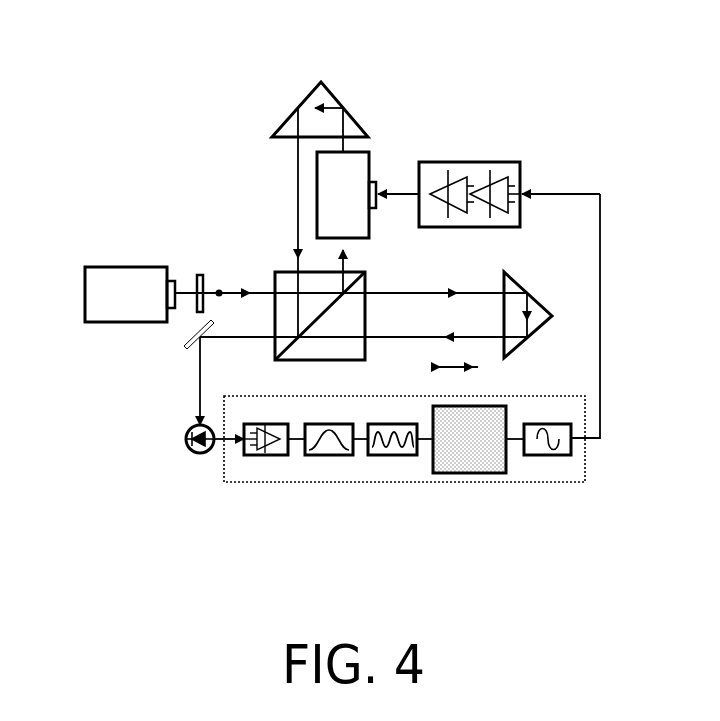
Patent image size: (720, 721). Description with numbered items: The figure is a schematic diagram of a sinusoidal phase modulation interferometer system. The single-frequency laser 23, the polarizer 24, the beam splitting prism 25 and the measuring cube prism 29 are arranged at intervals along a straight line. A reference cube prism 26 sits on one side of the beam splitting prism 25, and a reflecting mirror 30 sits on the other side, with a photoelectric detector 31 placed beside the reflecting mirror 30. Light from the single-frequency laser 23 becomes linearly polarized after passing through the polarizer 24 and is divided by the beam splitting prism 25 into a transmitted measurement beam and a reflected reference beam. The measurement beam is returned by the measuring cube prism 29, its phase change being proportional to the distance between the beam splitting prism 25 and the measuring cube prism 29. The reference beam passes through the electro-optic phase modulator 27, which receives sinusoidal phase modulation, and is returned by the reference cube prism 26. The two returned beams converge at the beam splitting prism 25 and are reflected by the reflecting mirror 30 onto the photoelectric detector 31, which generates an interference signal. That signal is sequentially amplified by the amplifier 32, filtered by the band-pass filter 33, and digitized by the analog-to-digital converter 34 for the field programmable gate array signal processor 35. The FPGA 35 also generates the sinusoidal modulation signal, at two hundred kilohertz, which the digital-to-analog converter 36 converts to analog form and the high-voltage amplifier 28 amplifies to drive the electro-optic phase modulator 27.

The single-frequency laser 23 is at (97, 171).
The polarizer 24 is at (154, 166).
The beam splitting prism 25 is at (280, 190).
The reference cube prism 26 is at (336, 78).
The electro-optic phase modulator 27 is at (395, 129).
The high-voltage amplifier 28 is at (499, 123).
The measuring cube prism 29 is at (592, 189).
The reflecting mirror 30 is at (114, 449).
The photoelectric detector 31 is at (229, 502).
The amplifier 32 is at (292, 501).
The band-pass filter 33 is at (356, 501).
The analog-to-digital converter 34 is at (422, 501).
The field programmable gate array signal processor FPGA 35 is at (494, 492).
The digital-to-analog converter 36 is at (578, 501).